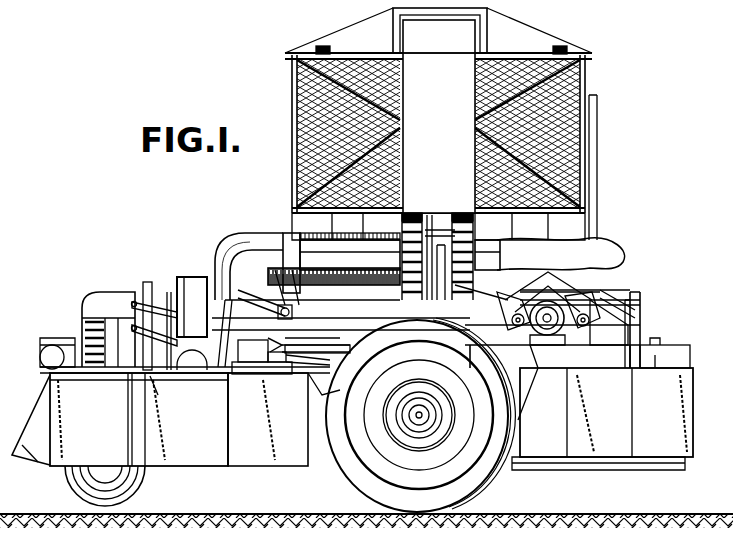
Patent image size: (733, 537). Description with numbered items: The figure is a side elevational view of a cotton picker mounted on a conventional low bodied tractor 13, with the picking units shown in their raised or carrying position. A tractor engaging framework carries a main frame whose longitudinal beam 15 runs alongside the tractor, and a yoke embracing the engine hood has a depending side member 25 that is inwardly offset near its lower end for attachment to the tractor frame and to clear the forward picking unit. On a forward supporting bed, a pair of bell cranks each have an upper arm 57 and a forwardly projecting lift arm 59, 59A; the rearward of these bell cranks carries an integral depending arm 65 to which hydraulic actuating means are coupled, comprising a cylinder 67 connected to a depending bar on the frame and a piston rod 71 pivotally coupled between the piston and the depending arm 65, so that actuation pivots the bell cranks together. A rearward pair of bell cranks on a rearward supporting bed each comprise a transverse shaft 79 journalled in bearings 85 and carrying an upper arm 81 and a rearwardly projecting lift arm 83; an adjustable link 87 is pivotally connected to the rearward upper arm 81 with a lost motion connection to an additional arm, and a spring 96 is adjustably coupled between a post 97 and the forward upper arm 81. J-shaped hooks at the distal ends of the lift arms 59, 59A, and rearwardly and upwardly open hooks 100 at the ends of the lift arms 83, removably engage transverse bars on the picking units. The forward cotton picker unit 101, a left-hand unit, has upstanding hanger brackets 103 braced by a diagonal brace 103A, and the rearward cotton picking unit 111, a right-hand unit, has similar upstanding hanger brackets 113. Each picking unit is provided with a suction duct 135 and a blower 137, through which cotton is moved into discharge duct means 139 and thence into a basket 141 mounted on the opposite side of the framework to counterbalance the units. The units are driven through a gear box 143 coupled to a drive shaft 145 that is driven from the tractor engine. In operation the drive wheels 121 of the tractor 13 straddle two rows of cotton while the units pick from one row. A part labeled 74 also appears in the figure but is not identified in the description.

The tractor 13 is at (86, 300).
The longitudinal beam 15 is at (485, 333).
The side member 25 is at (146, 289).
The upper arm 57 is at (292, 306).
The lift arm 59 is at (252, 300).
The lift arm 59A is at (168, 308).
The depending arm 65 is at (277, 343).
The cylinder 67 is at (318, 360).
The piston rod 71 is at (316, 346).
The duct body 74 is at (305, 264).
The transverse shaft 79 is at (609, 322).
The upper arm 81 is at (514, 300).
The lift arm 83 is at (550, 300).
The bearings 85 is at (518, 327).
The adjustable link 87 is at (544, 301).
The spring 96 is at (380, 286).
The post 97 is at (236, 310).
The J-shaped hooks 100 is at (640, 294).
The forward cotton picker unit 101 is at (102, 413).
The hanger brackets 103 is at (118, 331).
The brace 103A is at (163, 385).
The rearward cotton picking unit 111 is at (617, 413).
The hanger bracket 113 is at (648, 318).
The drive wheels 121 is at (496, 478).
The suction duct 135 is at (258, 238).
The blower 137 is at (468, 240).
The discharge duct means 139 is at (462, 58).
The basket 141 is at (573, 151).
The gear box 143 is at (252, 366).
The drive shaft 145 is at (539, 368).